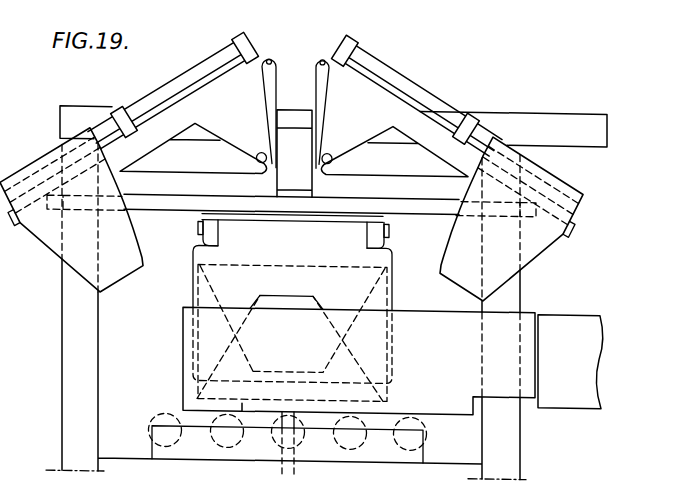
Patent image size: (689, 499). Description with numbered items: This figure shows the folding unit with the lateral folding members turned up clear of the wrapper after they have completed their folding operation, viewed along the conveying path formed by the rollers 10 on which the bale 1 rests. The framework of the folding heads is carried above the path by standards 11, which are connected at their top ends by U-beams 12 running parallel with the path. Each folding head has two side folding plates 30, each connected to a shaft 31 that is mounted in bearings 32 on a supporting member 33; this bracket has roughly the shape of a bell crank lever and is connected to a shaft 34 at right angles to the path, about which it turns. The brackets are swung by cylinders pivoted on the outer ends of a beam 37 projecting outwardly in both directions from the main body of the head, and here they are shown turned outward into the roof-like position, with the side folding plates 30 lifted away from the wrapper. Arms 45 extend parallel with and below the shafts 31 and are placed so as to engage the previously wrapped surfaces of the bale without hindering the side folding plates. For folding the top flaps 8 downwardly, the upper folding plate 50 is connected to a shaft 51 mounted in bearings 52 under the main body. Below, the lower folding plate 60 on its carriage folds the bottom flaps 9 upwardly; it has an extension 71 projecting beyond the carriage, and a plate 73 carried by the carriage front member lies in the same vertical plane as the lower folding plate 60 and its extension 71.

The bale 1 is at (317, 268).
The top flaps 8 is at (206, 291).
The bottom flaps 9 is at (313, 296).
The rollers 10 is at (418, 421).
The standards 11 is at (77, 371).
The U-beams 12 is at (512, 117).
The side folding plates 30 is at (90, 278).
The shaft 31 is at (175, 90).
The bearings 32 is at (233, 44).
The supporting member 33 is at (238, 143).
The shaft 34 is at (261, 164).
The beam 37 is at (167, 196).
The arms 45 is at (18, 231).
The upper folding plate 50 is at (393, 286).
The shaft 51 is at (389, 228).
The bearings 52 is at (200, 238).
The lower folding plate 60 is at (213, 349).
The extension 71 is at (523, 359).
The plate 73 is at (577, 359).